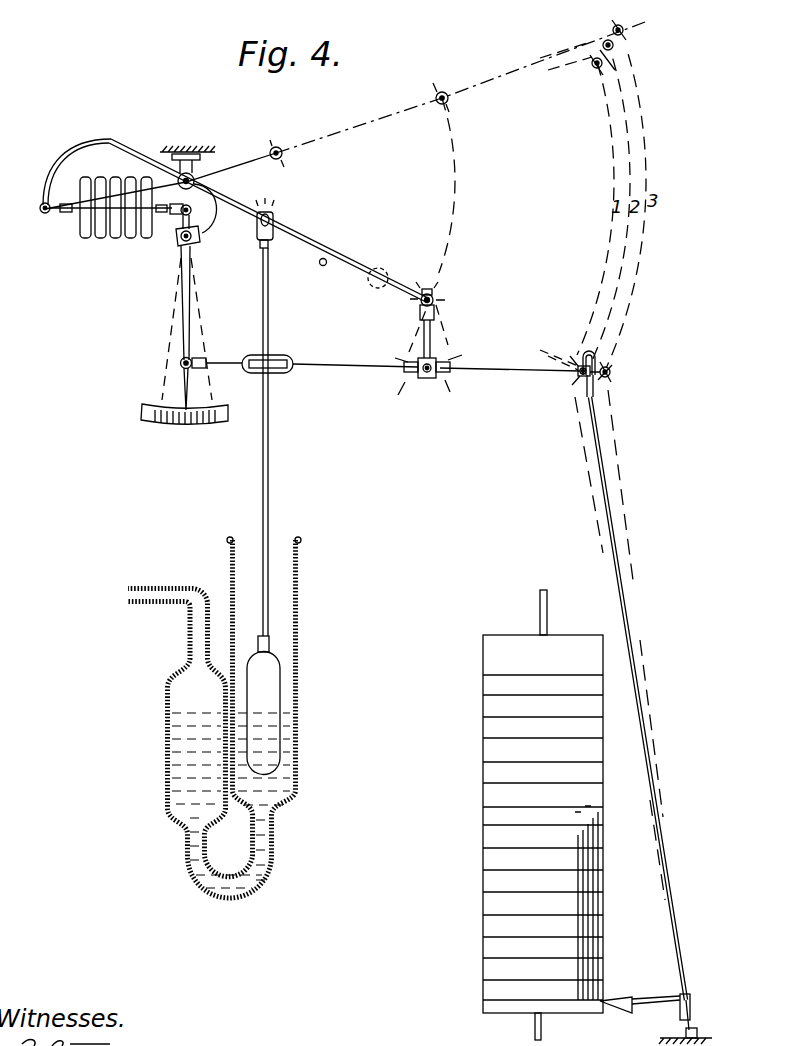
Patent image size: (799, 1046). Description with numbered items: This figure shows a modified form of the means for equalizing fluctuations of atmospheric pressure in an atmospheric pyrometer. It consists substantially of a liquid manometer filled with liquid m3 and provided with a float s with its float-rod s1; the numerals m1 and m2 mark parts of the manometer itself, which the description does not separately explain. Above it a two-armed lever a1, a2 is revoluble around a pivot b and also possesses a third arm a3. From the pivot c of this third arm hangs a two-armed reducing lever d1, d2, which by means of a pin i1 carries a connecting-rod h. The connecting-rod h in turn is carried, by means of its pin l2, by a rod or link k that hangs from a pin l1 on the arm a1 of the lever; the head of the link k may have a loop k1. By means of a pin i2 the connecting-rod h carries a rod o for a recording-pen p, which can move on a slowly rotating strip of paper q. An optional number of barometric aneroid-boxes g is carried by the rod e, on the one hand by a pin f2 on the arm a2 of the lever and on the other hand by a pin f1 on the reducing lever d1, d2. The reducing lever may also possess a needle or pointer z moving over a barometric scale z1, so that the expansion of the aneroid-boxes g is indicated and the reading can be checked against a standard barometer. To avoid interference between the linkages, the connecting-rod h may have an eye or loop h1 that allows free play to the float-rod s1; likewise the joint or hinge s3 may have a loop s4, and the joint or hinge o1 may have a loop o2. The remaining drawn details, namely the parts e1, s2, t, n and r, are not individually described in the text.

The lever arm a1 is at (318, 246).
The lever arm a2 is at (80, 161).
The third arm a3 is at (205, 238).
The pivot b is at (200, 178).
The pivot c is at (192, 248).
The reducing lever arm d1 is at (180, 240).
The reducing lever arm d2 is at (190, 320).
The rod e is at (111, 196).
The rod joint e1 is at (178, 216).
The pin f1 is at (232, 222).
The pin f2 is at (42, 214).
The barometric aneroid-boxes g is at (98, 240).
The connecting-rod h is at (343, 366).
The eye or loop h1 is at (286, 358).
The pin i1 is at (194, 356).
The pin i2 is at (622, 385).
The rod or link k is at (431, 340).
The loop k1 is at (434, 290).
The pin l1 is at (435, 304).
The pin l2 is at (428, 380).
The manometer vessel m1 is at (199, 800).
The float tube m2 is at (228, 717).
The liquid m3 is at (176, 806).
The stop n is at (370, 290).
The rod o is at (612, 560).
The joint or hinge o1 is at (584, 378).
The loop o2 is at (584, 352).
The recording-pen p is at (626, 990).
The strip of paper q is at (543, 815).
The base pivot r is at (684, 1030).
The float s is at (263, 705).
The float-rod s1 is at (277, 442).
The slider s2 is at (265, 214).
The joint or hinge s3 is at (268, 246).
The loop s4 is at (273, 215).
The stop pin t is at (322, 266).
The needle or pointer z is at (184, 398).
The barometric scale z1 is at (184, 426).